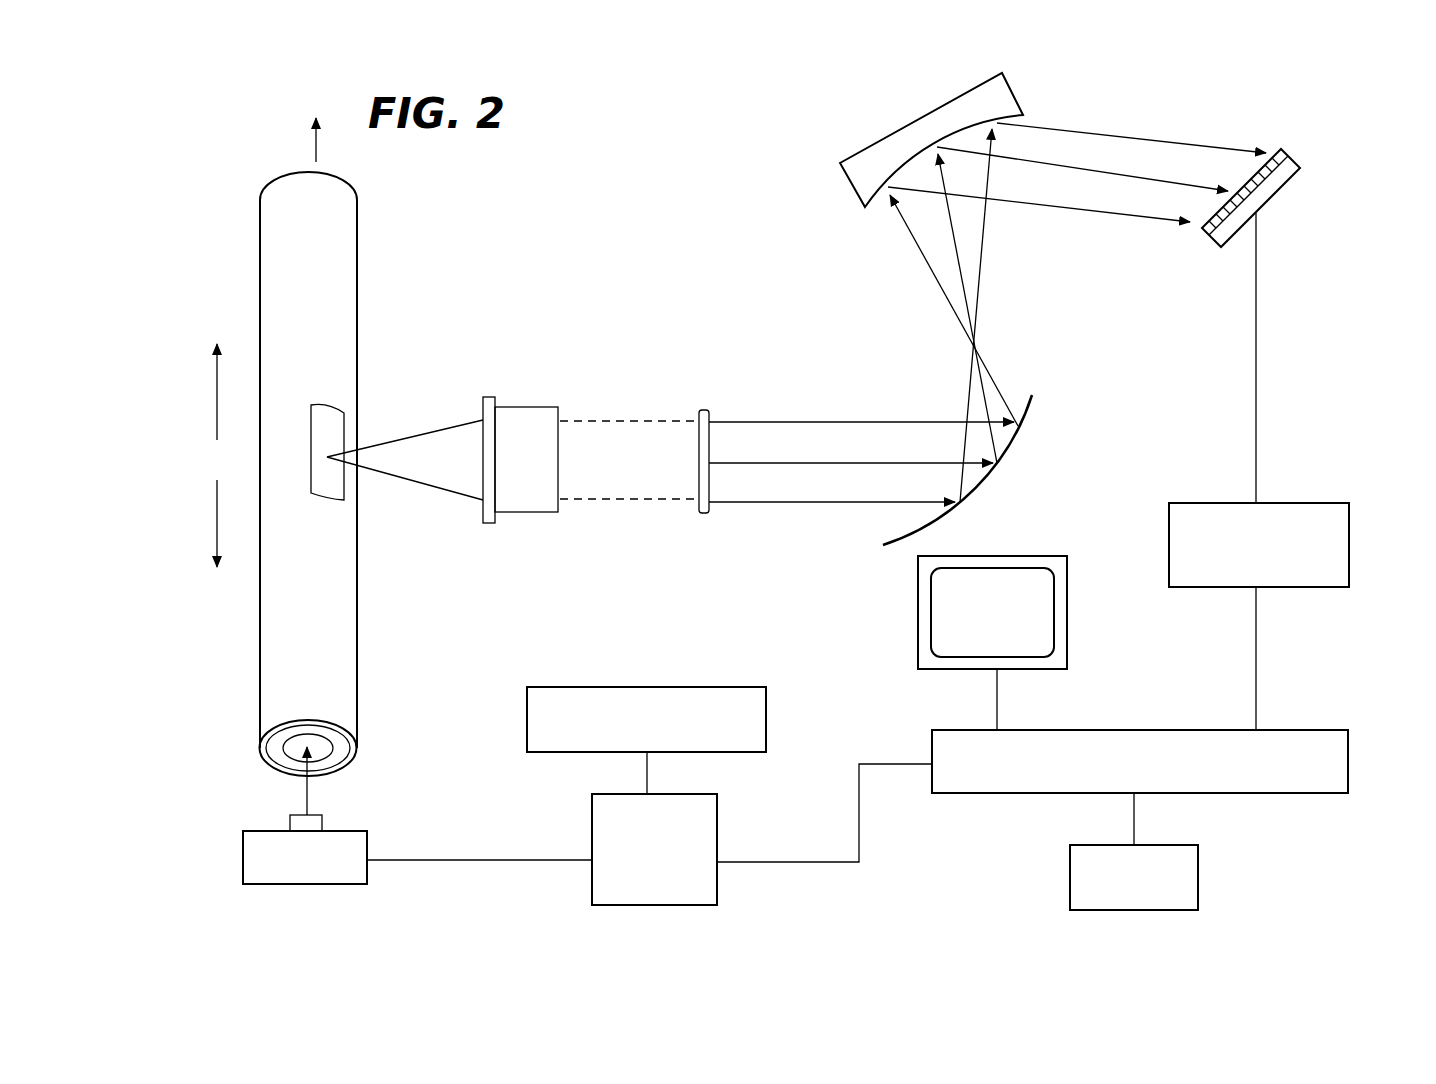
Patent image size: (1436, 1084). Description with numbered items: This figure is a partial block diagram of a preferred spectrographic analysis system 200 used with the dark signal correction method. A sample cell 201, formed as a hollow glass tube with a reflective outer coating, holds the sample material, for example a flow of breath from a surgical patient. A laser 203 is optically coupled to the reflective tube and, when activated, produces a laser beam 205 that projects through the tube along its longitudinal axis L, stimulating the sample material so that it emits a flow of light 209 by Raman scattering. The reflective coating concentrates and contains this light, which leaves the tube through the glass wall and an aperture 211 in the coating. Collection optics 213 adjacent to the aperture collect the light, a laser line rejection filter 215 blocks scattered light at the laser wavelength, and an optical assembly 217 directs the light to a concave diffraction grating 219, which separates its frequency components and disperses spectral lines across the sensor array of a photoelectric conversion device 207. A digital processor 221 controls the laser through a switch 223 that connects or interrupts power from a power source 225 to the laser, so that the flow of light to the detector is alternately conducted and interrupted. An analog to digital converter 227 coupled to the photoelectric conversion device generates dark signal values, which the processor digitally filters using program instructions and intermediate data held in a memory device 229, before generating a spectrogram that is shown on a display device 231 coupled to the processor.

The spectrographic analysis system 200 is at (622, 205).
The sample cell 201 is at (282, 580).
The laser 203 is at (243, 856).
The laser beam 205 is at (316, 794).
The photoelectric conversion device 207 is at (1285, 158).
The flow of light 209 is at (420, 452).
The aperture 211 is at (325, 417).
The collection optics 213 is at (528, 420).
The laser line rejection filter 215 is at (705, 410).
The optical assembly 217 is at (1010, 450).
The concave diffraction grating 219 is at (878, 142).
The digital processor 221 is at (1313, 730).
The switch 223 is at (592, 822).
The power source 225 is at (567, 687).
The analog to digital converter 227 is at (1300, 503).
The memory device 229 is at (1070, 883).
The display 231 is at (918, 620).